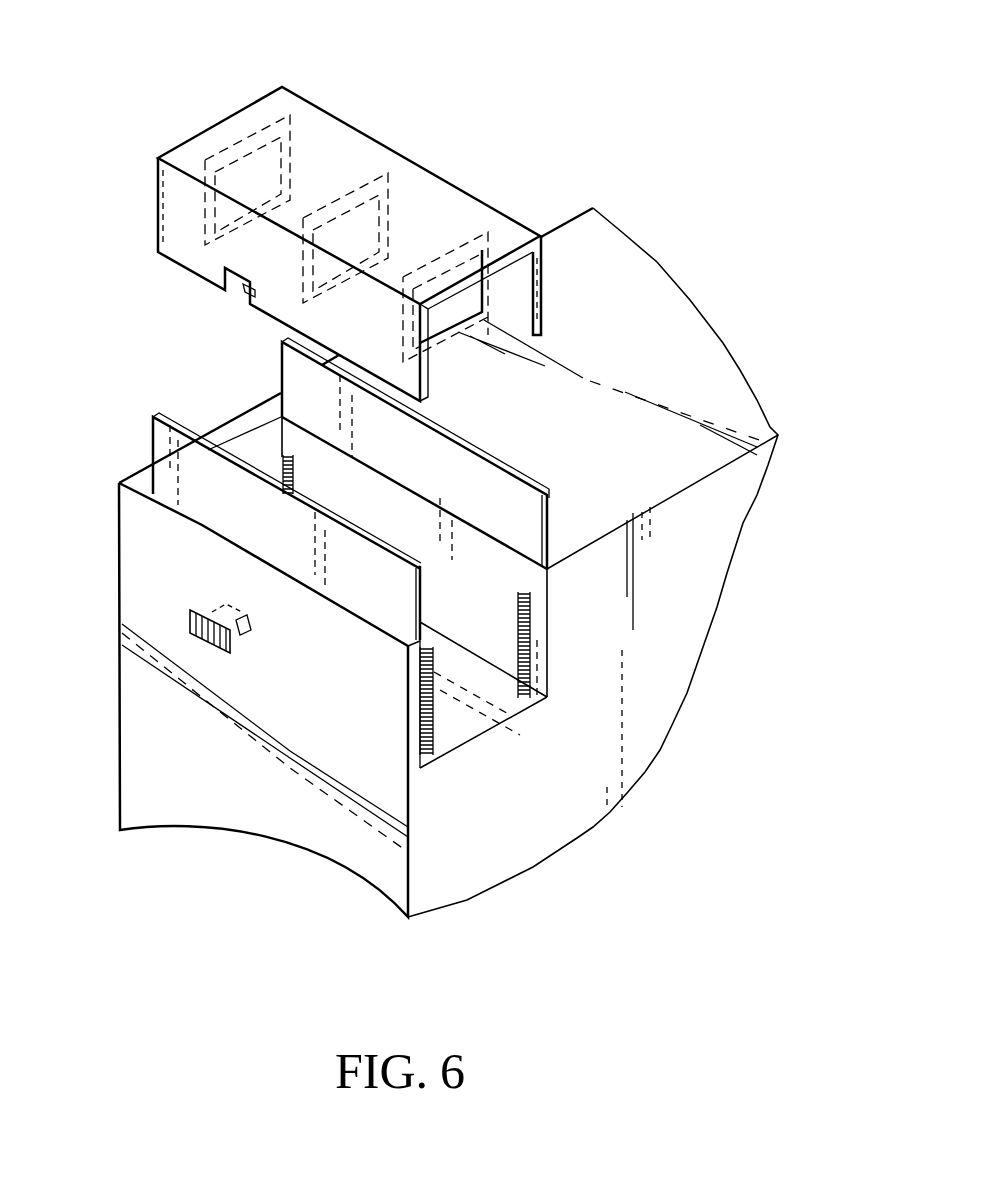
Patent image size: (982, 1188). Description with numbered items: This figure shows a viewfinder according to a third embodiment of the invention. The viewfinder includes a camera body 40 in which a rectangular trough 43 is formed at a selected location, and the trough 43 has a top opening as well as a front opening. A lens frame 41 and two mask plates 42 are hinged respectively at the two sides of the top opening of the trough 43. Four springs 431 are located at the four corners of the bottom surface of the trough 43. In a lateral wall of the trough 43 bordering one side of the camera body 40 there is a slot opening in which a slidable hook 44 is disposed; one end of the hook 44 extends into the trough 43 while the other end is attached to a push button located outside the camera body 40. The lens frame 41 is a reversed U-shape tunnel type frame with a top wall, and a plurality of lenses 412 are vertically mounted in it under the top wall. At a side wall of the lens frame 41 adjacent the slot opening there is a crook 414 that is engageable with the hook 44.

The camera body 40 is at (710, 372).
The lens frame 41 is at (400, 185).
The lenses 412 is at (243, 165).
The crook 414 is at (247, 293).
The mask plates 42 is at (163, 445).
The rectangular trough 43 is at (392, 542).
The springs 431 is at (283, 468).
The slidable hook 44 is at (207, 647).